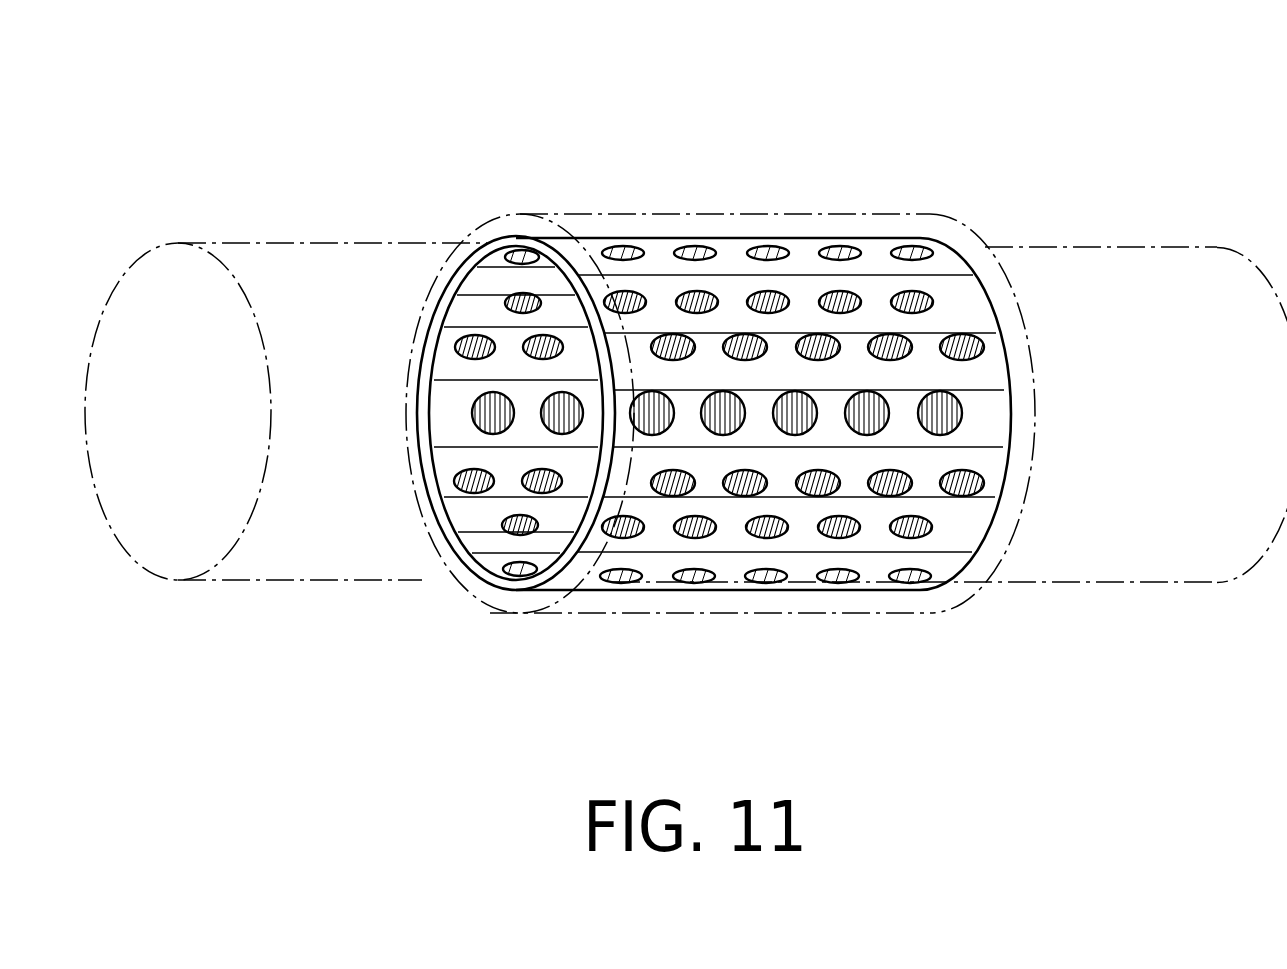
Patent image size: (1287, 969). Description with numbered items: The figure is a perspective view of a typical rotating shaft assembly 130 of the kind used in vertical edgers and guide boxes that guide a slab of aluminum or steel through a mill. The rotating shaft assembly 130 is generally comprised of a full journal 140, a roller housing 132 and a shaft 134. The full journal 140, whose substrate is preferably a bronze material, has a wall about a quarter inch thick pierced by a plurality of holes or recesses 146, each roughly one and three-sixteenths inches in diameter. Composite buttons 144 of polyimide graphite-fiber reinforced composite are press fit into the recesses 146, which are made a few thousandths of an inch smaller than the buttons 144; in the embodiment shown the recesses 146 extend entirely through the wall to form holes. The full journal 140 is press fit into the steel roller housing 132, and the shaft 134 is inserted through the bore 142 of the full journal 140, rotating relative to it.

The rotating shaft assembly 130 is at (490, 152).
The roller housing 132 is at (817, 214).
The shaft 134 is at (1100, 585).
The full journal 140 is at (735, 282).
The bore 142 is at (458, 391).
The composite buttons 144 is at (737, 427).
The recesses 146 is at (722, 430).